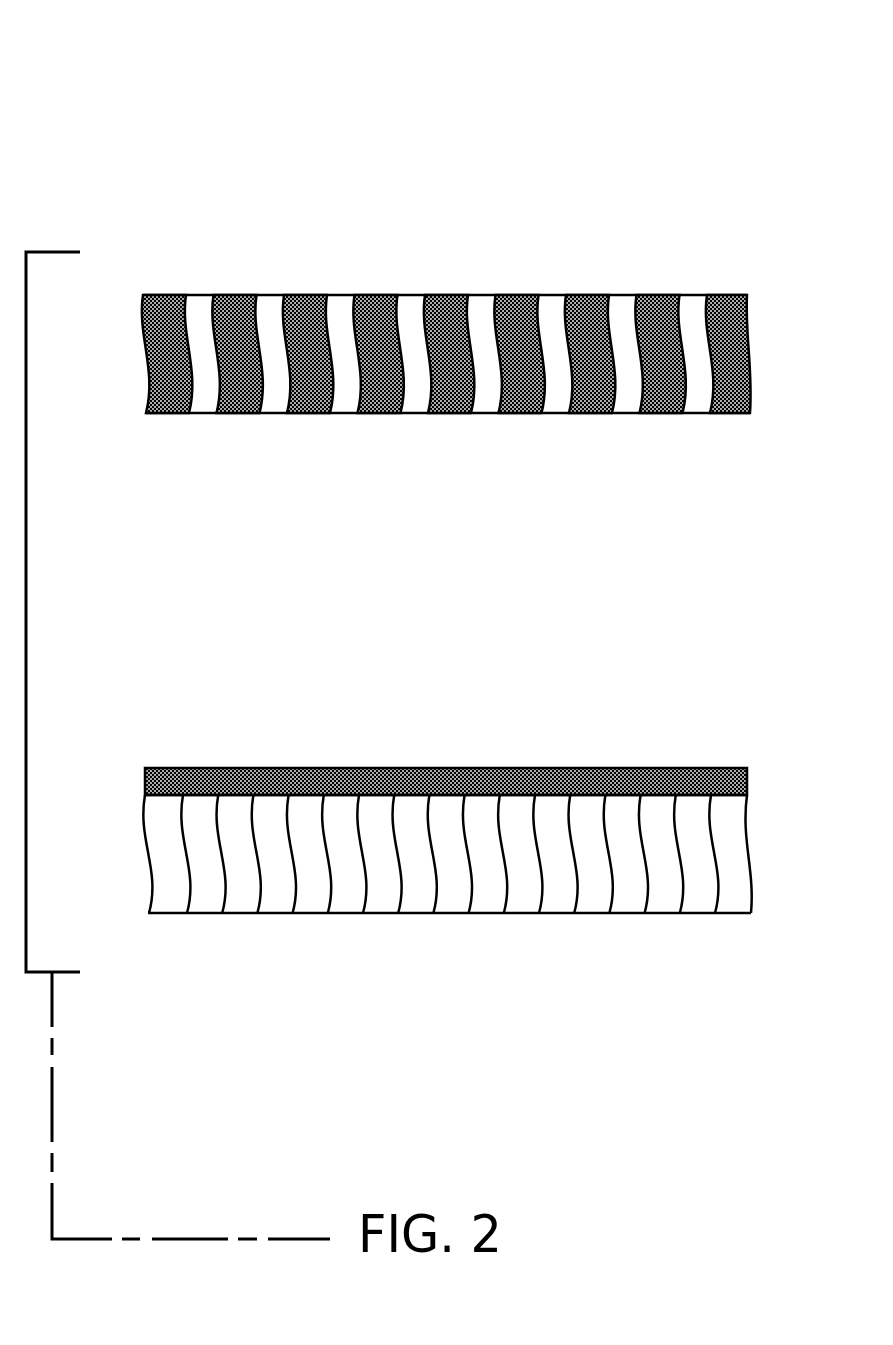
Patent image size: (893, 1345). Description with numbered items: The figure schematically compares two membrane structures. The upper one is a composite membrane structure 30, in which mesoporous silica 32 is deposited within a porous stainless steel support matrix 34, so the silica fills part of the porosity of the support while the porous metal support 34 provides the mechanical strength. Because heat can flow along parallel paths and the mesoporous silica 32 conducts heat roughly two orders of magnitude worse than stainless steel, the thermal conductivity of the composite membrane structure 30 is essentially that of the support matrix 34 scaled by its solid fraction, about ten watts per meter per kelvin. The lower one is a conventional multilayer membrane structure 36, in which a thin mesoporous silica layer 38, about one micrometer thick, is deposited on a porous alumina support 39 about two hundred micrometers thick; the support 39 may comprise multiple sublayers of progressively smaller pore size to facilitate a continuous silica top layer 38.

The composite membrane structure 30 is at (640, 93).
The mesoporous silica 32 is at (445, 300).
The porous stainless steel support matrix 34 is at (620, 310).
The multilayer membrane structure 36 is at (640, 695).
The mesoporous silica layer 38 is at (748, 782).
The porous alumina support 39 is at (743, 877).